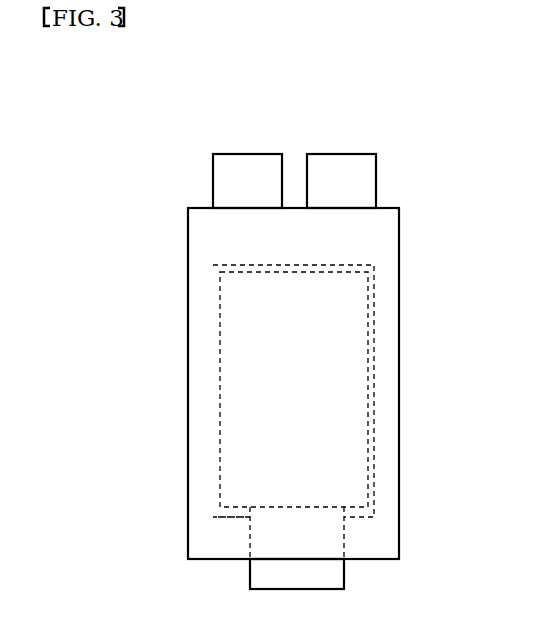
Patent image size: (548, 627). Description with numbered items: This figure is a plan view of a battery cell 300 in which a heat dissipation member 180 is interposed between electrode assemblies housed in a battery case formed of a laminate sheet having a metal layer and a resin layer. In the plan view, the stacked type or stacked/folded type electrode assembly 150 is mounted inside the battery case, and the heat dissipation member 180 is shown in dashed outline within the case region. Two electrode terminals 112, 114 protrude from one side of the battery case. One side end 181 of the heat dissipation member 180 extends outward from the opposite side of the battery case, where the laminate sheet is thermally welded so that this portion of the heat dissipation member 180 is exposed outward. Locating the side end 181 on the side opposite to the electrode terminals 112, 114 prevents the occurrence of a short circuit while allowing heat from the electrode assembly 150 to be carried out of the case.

The battery cell 300 is at (80, 141).
The electrode terminal 112 is at (210, 173).
The electrode terminal 114 is at (374, 183).
The electrode assembly 150 is at (399, 313).
The heat dissipation member 180 is at (312, 419).
The side end of heat dissipation member 181 is at (333, 580).